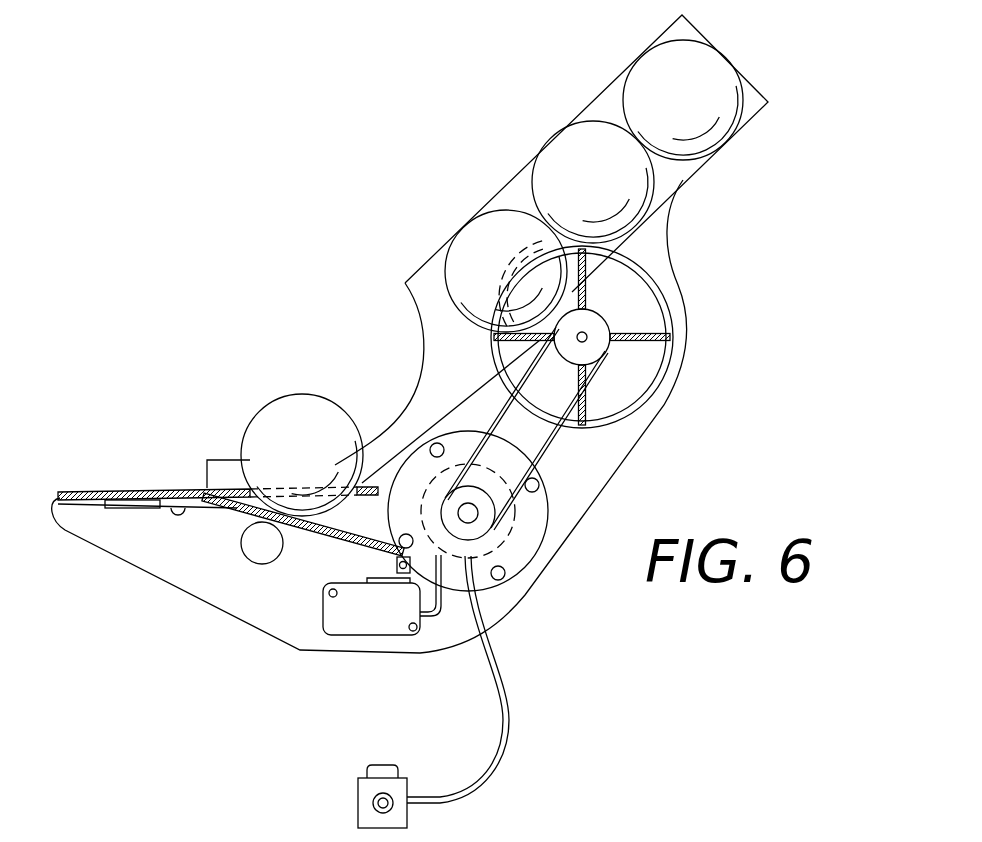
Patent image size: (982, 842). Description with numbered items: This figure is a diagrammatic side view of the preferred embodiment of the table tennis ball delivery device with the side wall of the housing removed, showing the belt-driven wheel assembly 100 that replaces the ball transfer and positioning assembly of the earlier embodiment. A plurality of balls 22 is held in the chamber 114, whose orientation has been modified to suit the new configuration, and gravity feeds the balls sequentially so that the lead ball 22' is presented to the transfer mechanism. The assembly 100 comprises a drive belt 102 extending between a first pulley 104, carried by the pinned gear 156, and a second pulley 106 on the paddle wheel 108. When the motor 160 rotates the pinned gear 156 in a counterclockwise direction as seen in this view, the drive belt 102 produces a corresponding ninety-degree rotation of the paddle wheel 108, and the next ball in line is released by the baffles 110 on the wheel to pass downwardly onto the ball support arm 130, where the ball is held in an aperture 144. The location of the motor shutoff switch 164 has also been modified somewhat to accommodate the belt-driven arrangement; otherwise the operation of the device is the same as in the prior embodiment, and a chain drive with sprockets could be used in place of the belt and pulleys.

The balls 22 is at (559, 184).
The lead ball 22' is at (285, 421).
The chamber 114 is at (756, 104).
The belt-driven wheel assembly 100 is at (572, 442).
The drive belt 102 is at (543, 457).
The first pulley 104 is at (477, 532).
The second pulley 106 is at (600, 328).
The paddle wheel 108 is at (663, 373).
The baffles 110 is at (670, 342).
The ball support arm 130 is at (197, 489).
The aperture 144 is at (318, 527).
The pinned gear 156 is at (547, 538).
The motor 160 is at (516, 511).
The motor shutoff switch 164 is at (362, 625).